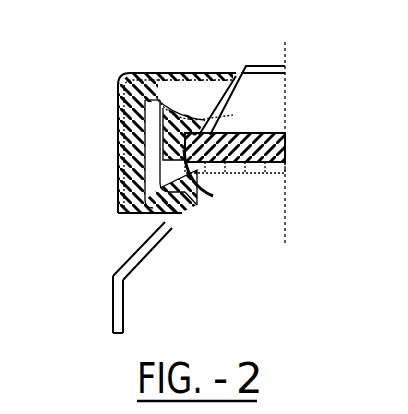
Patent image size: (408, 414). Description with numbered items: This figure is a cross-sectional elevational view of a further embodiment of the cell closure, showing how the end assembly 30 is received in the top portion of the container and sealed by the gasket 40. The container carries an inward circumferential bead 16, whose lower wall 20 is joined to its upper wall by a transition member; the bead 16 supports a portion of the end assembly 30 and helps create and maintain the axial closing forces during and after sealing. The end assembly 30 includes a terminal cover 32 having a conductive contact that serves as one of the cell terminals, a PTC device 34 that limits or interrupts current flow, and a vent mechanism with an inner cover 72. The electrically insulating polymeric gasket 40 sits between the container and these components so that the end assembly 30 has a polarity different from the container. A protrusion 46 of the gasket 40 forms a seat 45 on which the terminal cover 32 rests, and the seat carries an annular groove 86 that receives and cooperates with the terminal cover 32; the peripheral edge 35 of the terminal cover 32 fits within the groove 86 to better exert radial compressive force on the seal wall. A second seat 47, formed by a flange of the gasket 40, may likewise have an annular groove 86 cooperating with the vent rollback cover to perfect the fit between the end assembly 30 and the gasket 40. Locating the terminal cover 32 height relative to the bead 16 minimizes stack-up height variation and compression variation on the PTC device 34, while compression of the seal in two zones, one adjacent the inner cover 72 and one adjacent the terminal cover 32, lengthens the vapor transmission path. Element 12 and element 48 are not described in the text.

The vertical leg of bracket 12 is at (100, 271).
The bead 16 is at (140, 236).
The lower wall 20 is at (120, 50).
The end assembly 30 is at (208, 58).
The terminal cover 32 is at (255, 66).
The PTC device 34 is at (250, 133).
The peripheral edge 35 is at (118, 90).
The gasket 40 is at (122, 77).
The seat 45 is at (118, 160).
The protrusion 46 is at (219, 180).
The seat 47 is at (175, 215).
The cavity 48 is at (218, 118).
The inner cover 72 is at (243, 175).
The annular groove 86 is at (118, 130).